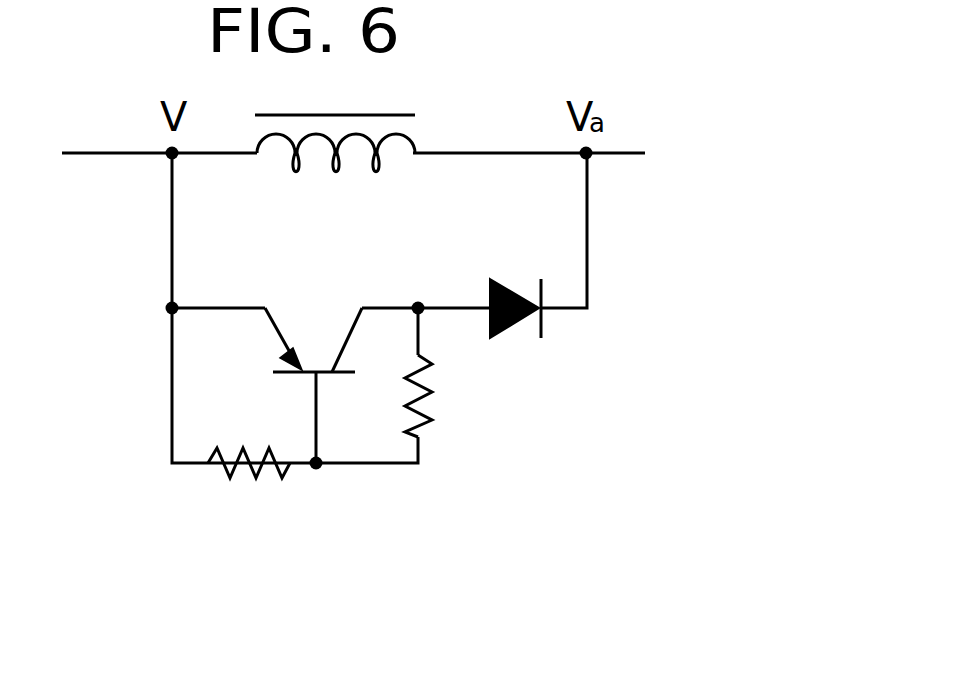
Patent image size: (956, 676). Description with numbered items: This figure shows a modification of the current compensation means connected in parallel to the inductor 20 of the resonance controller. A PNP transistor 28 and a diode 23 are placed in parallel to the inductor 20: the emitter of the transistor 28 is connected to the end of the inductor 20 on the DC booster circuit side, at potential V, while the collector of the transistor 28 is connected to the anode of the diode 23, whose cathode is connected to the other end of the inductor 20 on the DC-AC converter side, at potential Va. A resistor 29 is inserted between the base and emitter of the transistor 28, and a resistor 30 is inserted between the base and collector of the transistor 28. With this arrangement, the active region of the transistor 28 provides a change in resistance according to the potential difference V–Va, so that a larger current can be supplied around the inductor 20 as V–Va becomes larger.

The inductor 20 is at (413, 148).
The diode 23 is at (512, 287).
The PNP transistor 28 is at (345, 342).
The resistor 29 is at (250, 472).
The resistor 30 is at (432, 393).